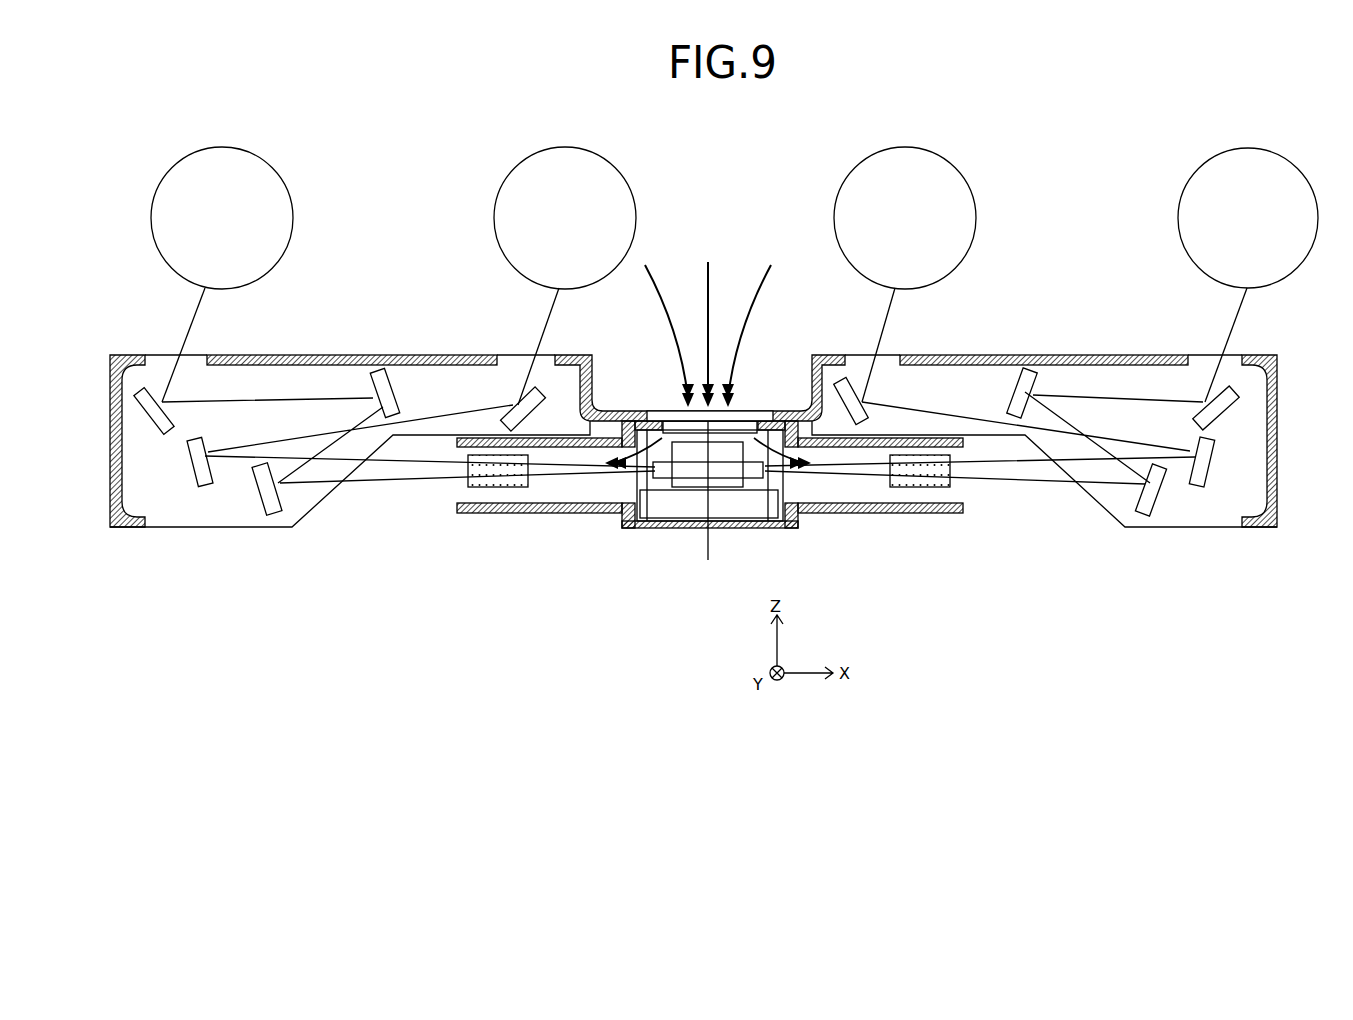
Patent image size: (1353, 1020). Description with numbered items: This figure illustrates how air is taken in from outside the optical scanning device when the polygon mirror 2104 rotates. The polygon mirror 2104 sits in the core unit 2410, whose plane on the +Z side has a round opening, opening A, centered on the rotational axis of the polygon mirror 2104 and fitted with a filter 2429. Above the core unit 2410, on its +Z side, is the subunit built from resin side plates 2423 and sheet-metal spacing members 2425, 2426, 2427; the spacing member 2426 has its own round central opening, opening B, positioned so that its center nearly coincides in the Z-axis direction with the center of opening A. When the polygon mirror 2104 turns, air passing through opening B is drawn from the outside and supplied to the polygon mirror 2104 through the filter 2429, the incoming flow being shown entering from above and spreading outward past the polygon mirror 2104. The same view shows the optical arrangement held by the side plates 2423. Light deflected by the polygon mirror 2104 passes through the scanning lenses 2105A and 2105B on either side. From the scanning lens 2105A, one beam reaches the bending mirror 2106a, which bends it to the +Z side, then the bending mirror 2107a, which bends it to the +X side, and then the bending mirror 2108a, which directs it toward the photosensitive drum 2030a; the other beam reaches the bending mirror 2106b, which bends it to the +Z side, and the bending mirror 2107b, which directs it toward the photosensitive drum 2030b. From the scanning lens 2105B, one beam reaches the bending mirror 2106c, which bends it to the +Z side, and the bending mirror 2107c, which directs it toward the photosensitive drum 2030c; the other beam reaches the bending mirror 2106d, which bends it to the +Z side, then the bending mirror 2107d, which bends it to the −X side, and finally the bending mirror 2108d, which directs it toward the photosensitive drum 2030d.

The photosensitive drum 2030a is at (1195, 168).
The photosensitive drum 2030b is at (852, 168).
The photosensitive drum 2030c is at (512, 168).
The photosensitive drum 2030d is at (170, 168).
The polygon mirror 2104 is at (720, 478).
The scanning lens 2105A is at (913, 488).
The scanning lens 2105B is at (497, 488).
The bending mirror 2106a is at (1163, 492).
The bending mirror 2106b is at (1212, 467).
The bending mirror 2106c is at (195, 474).
The bending mirror 2106d is at (265, 494).
The bending mirror 2107a is at (1010, 395).
The bending mirror 2107b is at (868, 419).
The bending mirror 2107c is at (540, 406).
The bending mirror 2107d is at (394, 396).
The bending mirror 2108a is at (1193, 418).
The bending mirror 2108d is at (160, 432).
The core unit 2410 is at (863, 513).
The side plate 2423 is at (334, 488).
The spacing member 2425 is at (112, 428).
The spacing member 2426 is at (812, 386).
The spacing member 2427 is at (388, 355).
The filter 2429 is at (675, 421).